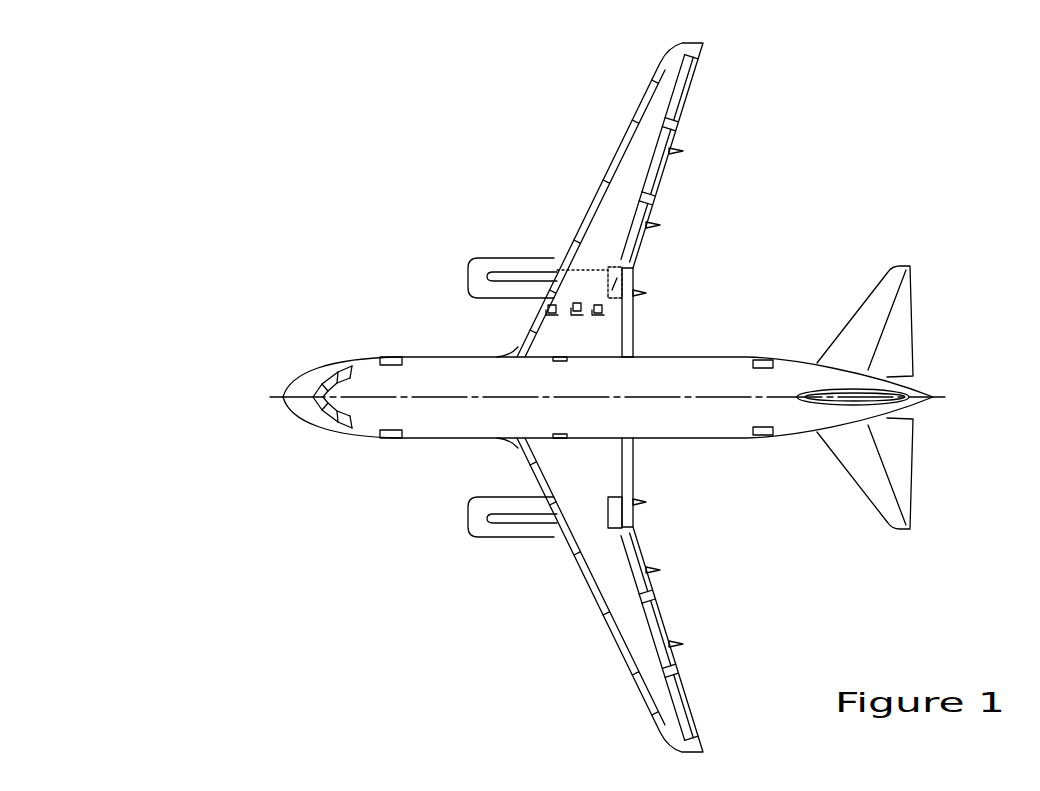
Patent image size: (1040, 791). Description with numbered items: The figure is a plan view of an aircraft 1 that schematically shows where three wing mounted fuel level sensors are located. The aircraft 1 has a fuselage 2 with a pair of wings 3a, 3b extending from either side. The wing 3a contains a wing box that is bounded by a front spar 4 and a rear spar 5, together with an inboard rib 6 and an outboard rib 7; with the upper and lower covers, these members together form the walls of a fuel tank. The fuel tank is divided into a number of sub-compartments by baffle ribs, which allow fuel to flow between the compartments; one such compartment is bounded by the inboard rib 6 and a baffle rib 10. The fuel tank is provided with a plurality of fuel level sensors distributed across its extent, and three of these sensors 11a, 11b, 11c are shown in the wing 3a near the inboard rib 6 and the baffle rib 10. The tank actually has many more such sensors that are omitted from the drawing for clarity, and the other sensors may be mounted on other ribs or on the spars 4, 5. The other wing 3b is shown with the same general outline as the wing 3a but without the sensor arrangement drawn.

The aircraft 1 is at (372, 284).
The fuselage 2 is at (437, 410).
The wing 3a is at (685, 88).
The wing 3b is at (620, 650).
The front spar 4 is at (610, 173).
The rear spar 5 is at (650, 212).
The inboard rib 6 is at (565, 316).
The outboard rib 7 is at (656, 118).
The baffle rib 10 is at (597, 270).
The fuel level sensor 11a is at (548, 312).
The fuel level sensor 11b is at (575, 305).
The fuel level sensor 11c is at (607, 308).